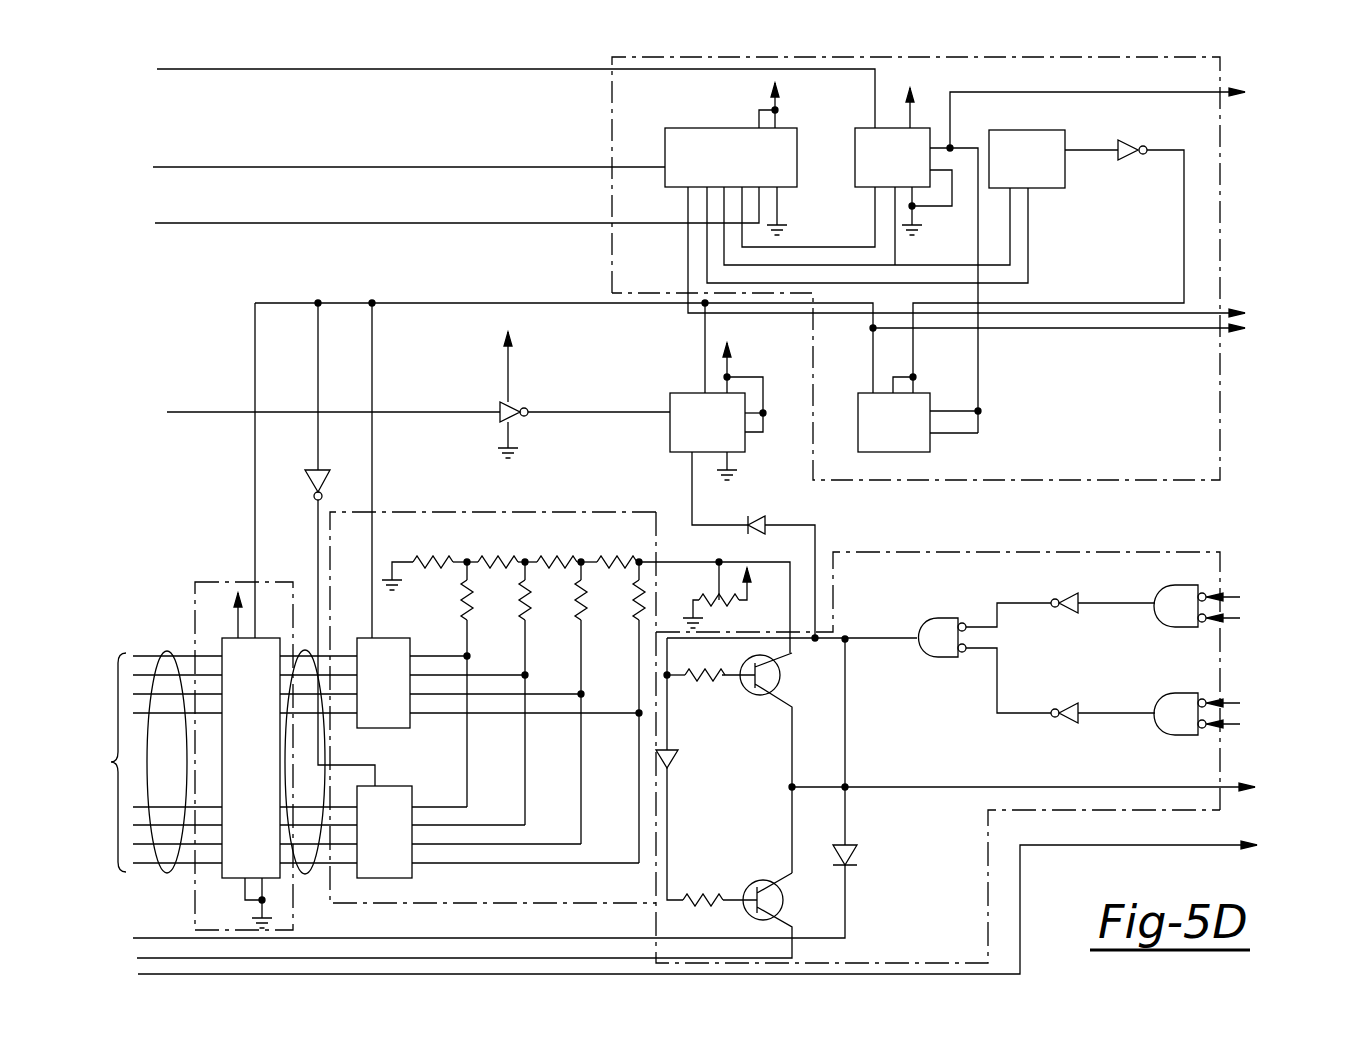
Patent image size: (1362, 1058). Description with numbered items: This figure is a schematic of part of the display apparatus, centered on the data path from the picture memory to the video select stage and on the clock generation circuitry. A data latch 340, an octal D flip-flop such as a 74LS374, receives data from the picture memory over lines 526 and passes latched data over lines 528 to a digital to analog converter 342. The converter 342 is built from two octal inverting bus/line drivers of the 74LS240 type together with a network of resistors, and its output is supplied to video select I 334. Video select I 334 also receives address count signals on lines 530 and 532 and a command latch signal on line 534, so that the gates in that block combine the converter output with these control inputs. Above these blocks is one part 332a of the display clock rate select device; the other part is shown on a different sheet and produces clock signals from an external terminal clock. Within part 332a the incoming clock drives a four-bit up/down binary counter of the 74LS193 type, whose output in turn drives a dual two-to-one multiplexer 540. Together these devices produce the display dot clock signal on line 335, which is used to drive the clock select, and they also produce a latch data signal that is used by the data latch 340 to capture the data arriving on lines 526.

The display clock rate select device part 332a is at (612, 96).
The dual 2/1 multiplexer 540 is at (920, 128).
The line 335 is at (1133, 93).
The data latch 340 is at (240, 538).
The digital to analog converter 342 is at (450, 512).
The video select I 334 is at (1040, 533).
The lines 526 is at (165, 650).
The lines 528 is at (305, 873).
The line 530 is at (1240, 595).
The line 532 is at (1240, 618).
The line 534 is at (1240, 702).